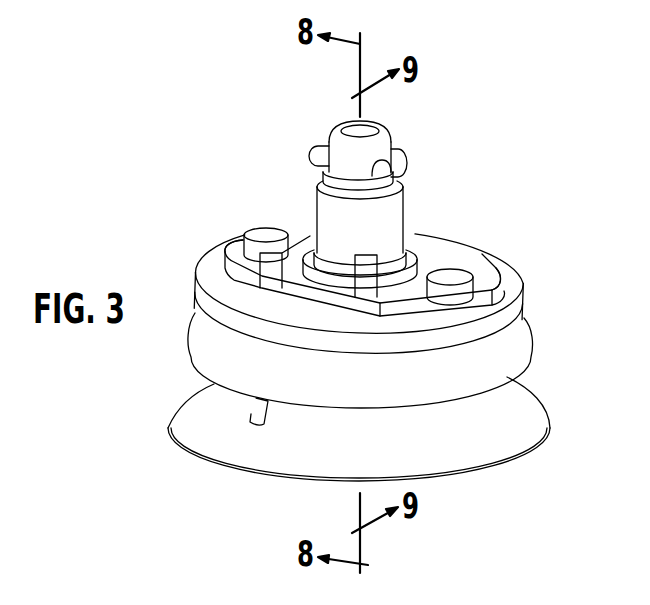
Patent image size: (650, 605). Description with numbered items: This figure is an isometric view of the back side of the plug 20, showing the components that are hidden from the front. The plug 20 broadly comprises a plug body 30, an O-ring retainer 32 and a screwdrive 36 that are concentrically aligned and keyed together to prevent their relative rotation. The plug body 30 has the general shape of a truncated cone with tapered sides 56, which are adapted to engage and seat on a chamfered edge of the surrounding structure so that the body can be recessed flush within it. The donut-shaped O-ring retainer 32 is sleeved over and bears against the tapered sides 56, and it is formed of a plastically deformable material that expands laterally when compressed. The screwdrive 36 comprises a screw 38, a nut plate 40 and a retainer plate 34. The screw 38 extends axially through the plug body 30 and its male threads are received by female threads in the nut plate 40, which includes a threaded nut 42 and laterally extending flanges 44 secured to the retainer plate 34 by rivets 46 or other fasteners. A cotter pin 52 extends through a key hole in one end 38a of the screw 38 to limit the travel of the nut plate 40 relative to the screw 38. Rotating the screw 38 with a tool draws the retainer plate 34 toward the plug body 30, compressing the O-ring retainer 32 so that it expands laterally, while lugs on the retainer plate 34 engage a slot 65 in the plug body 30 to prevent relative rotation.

The plug 20 is at (492, 116).
The plug body 30 is at (483, 438).
The O-ring retainer 32 is at (514, 342).
The retainer plate 34 is at (509, 281).
The screwdrive 36 is at (432, 216).
The screw 38 is at (386, 143).
The one end of the screw 38a is at (334, 100).
The nut plate 40 is at (237, 224).
The threaded nut 42 is at (392, 208).
The laterally extending flanges 44 is at (507, 282).
The rivets 46 is at (265, 233).
The cotter pin 52 is at (307, 157).
The tapered sides 56 is at (524, 408).
The slot 65 is at (253, 418).